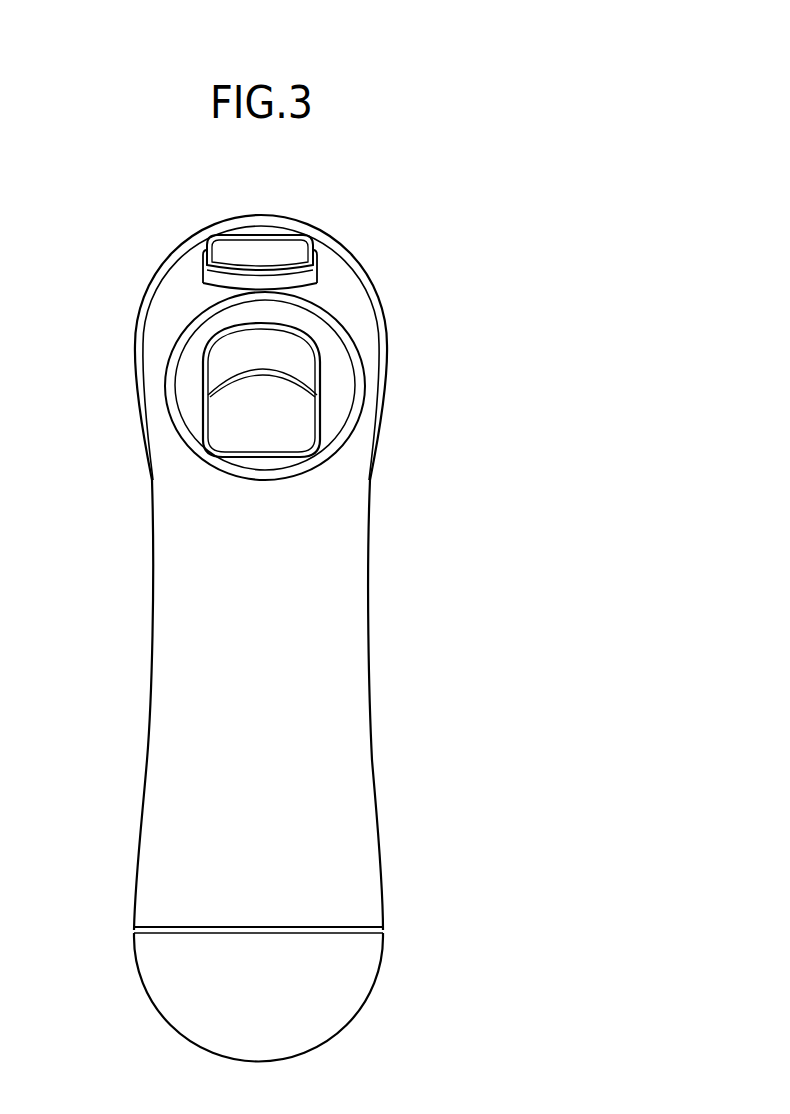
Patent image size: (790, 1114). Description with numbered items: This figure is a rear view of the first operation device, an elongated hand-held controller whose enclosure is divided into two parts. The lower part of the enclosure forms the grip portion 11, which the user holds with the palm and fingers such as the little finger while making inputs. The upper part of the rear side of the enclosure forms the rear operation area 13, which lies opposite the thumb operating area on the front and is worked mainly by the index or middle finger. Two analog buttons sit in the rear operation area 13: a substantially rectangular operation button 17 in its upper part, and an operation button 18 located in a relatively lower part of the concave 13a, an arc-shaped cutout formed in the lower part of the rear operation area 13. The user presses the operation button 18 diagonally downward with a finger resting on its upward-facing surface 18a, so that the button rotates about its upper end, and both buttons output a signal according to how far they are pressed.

The grip portion 11 is at (258, 755).
The rear operation area 13 is at (377, 332).
The concave 13a is at (187, 403).
The operation button 17 is at (302, 243).
The operation button 18 is at (318, 413).
The surface facing upward 18a is at (293, 357).